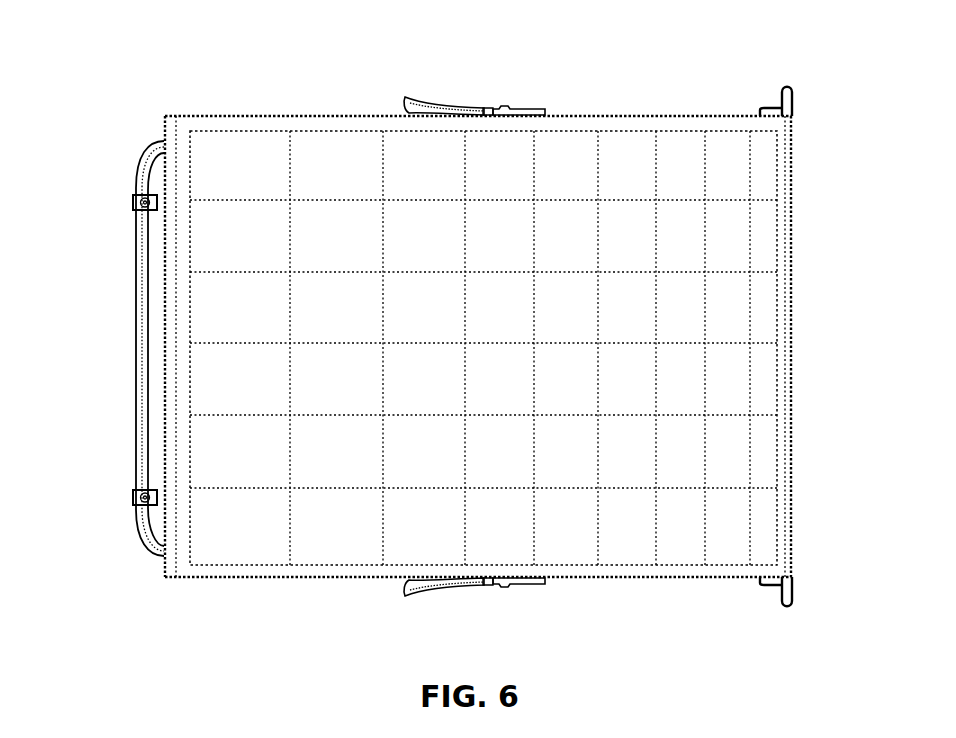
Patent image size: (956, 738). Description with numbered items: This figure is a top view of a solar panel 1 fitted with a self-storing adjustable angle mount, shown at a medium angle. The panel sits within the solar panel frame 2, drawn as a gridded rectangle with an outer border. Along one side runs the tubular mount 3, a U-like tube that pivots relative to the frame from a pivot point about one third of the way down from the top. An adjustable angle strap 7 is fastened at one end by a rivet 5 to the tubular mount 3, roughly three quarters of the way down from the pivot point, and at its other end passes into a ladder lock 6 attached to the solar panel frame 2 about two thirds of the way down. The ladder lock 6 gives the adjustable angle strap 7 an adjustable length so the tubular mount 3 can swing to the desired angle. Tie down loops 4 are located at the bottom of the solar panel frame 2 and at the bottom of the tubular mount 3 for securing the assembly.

The panel with grid 1 is at (333, 160).
The solar panel frame 2 is at (665, 108).
The tubular mount 3 is at (134, 350).
The tie down loops 4 is at (129, 207).
The rivet 5 is at (134, 198).
The ladder lock 6 is at (488, 97).
The adjustable angle strap 7 is at (426, 93).